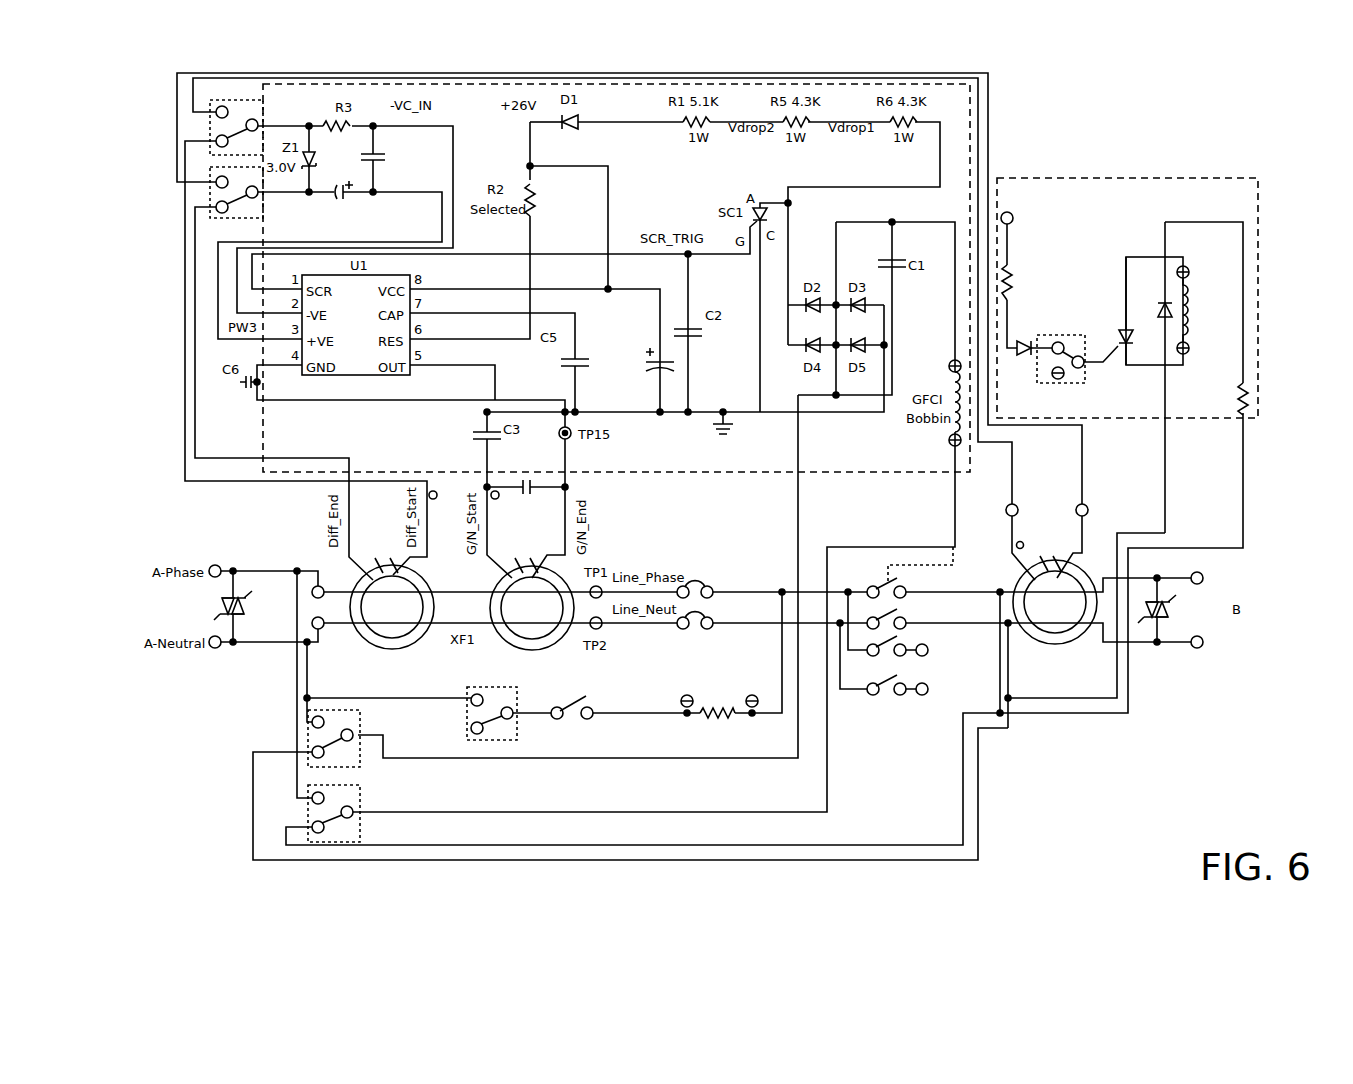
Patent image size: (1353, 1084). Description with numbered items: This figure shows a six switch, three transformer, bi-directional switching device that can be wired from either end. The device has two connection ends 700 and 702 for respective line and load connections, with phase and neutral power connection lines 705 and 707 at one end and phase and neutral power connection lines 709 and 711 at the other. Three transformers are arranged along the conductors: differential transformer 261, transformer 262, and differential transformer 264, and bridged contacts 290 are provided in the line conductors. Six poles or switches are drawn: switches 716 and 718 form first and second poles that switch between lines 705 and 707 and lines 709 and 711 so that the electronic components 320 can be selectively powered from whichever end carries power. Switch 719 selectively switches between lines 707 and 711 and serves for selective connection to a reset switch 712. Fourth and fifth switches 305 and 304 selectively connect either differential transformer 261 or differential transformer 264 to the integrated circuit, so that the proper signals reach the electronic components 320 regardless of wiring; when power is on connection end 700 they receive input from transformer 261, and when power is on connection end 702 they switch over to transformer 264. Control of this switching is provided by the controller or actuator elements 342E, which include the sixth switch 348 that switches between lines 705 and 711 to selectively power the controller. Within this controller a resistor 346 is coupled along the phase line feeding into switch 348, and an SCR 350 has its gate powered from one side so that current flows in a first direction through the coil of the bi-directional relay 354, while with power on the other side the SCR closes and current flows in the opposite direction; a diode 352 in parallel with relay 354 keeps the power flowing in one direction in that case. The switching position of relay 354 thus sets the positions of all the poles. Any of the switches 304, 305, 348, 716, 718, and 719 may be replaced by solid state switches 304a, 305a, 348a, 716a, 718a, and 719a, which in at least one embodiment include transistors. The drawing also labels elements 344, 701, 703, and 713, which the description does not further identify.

The electronic components 320 is at (978, 103).
The fifth switch 304 is at (214, 125).
The solid state switch 304a is at (212, 118).
The fourth switch 305 is at (214, 195).
The solid state switch 305a is at (213, 165).
The controller or actuator elements 342E is at (1101, 176).
The resistor 346 is at (1010, 284).
The sixth switch 348 is at (1080, 378).
The solid state switch 348a is at (1040, 384).
The SCR 350 is at (1113, 318).
The diode 352 is at (1162, 300).
The bi-directional relay 354 is at (1191, 297).
The resistor 344 is at (1250, 390).
The phase connection line 705 is at (262, 571).
The neutral connection line 707 is at (233, 645).
The connection end 700 is at (216, 604).
The triac gate 701 is at (240, 618).
The differential transformer 261 is at (356, 636).
The transformer 262 is at (505, 650).
The differential transformer 264 is at (1086, 646).
The bridged contacts 290 is at (886, 698).
The first pole switch 716 is at (322, 740).
The solid state switch 716a is at (310, 745).
The second pole switch 718 is at (314, 814).
The solid state switch 718a is at (310, 808).
The third pole switch 719 is at (470, 713).
The solid state switch 719a is at (468, 688).
The reset switch 712 is at (576, 720).
The test circuit line 713 is at (686, 746).
The phase connection line 709 is at (1204, 578).
The neutral connection line 711 is at (1177, 648).
The connection end 702 is at (1163, 584).
The triac gate 703 is at (1150, 646).